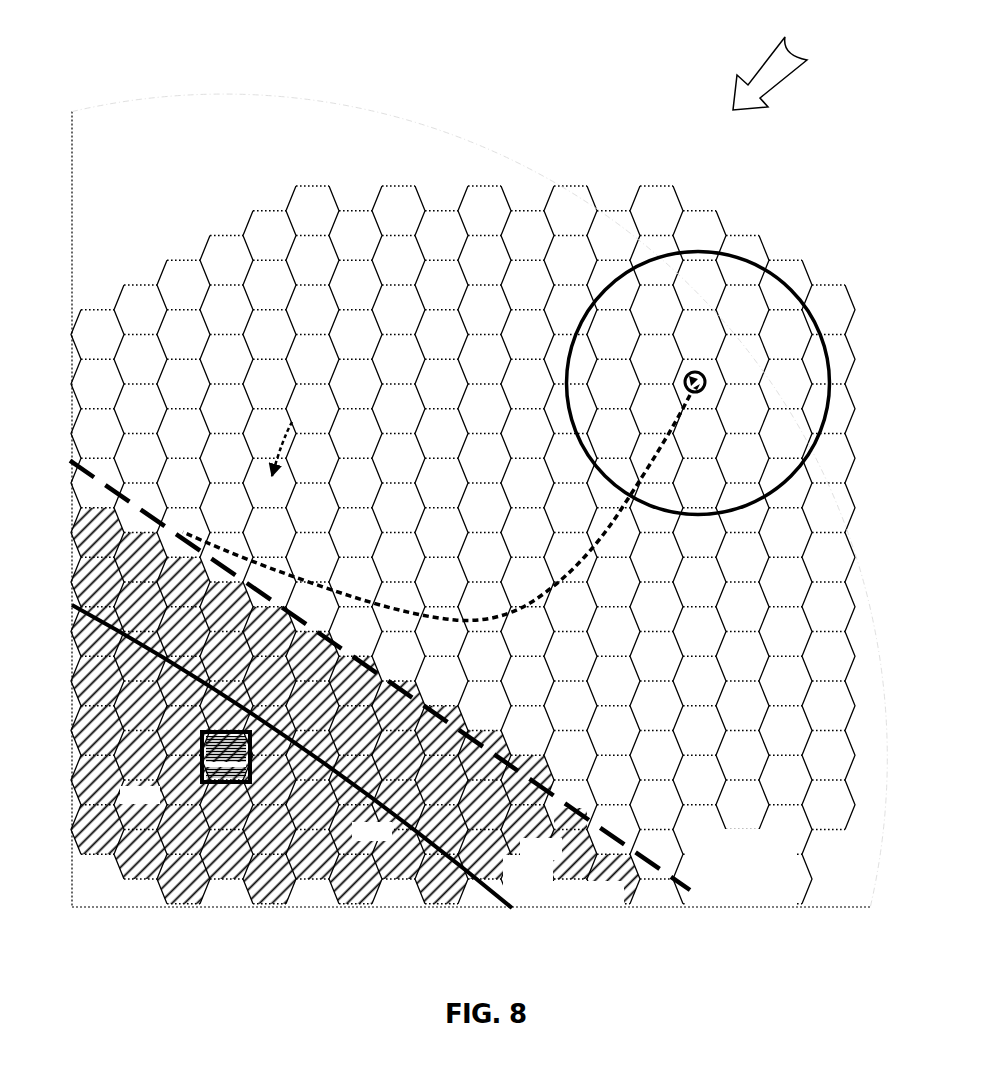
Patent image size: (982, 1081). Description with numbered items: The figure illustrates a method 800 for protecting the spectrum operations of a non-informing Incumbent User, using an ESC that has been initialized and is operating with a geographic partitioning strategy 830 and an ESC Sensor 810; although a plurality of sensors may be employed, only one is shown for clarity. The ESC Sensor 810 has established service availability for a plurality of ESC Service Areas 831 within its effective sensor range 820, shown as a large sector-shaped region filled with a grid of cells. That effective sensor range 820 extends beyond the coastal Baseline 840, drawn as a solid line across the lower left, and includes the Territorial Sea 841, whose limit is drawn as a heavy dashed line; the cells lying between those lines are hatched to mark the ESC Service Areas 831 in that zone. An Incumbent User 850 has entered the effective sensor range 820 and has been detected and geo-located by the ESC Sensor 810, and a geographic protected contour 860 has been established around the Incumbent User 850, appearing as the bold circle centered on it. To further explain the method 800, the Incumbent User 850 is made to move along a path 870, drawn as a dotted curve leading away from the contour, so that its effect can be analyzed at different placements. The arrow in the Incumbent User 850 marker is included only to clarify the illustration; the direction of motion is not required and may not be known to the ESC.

The method 800 is at (785, 63).
The ESC Sensor 810 is at (207, 782).
The effective sensor range 820 is at (396, 135).
The geographic partitioning strategy 830 is at (275, 389).
The ESC Service Areas 831 is at (314, 850).
The Baseline 840 is at (483, 868).
The Territorial Sea 841 is at (659, 862).
The Incumbent User 850 is at (712, 371).
The geographic protected contour 860 is at (616, 300).
The path 870 is at (612, 539).